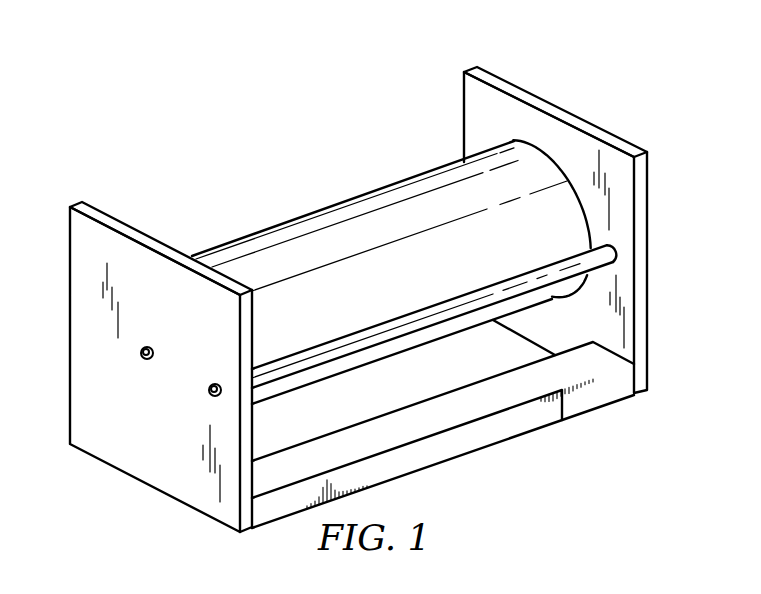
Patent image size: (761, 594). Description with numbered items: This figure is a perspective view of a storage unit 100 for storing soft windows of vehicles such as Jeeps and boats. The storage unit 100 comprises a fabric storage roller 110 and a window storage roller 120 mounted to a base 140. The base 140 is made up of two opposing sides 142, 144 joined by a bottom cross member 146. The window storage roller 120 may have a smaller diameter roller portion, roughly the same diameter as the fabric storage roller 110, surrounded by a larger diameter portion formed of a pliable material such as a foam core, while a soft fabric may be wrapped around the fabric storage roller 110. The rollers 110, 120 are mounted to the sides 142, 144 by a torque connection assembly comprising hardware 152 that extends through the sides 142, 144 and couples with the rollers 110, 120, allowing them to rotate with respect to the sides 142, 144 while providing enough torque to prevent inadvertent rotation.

The storage unit 100 is at (328, 107).
The fabric storage roller 110 is at (403, 334).
The window storage roller 120 is at (317, 212).
The base 140 is at (98, 353).
The side 142 is at (160, 463).
The side 144 is at (622, 204).
The bottom cross member 146 is at (453, 437).
The hardware 152 is at (142, 360).